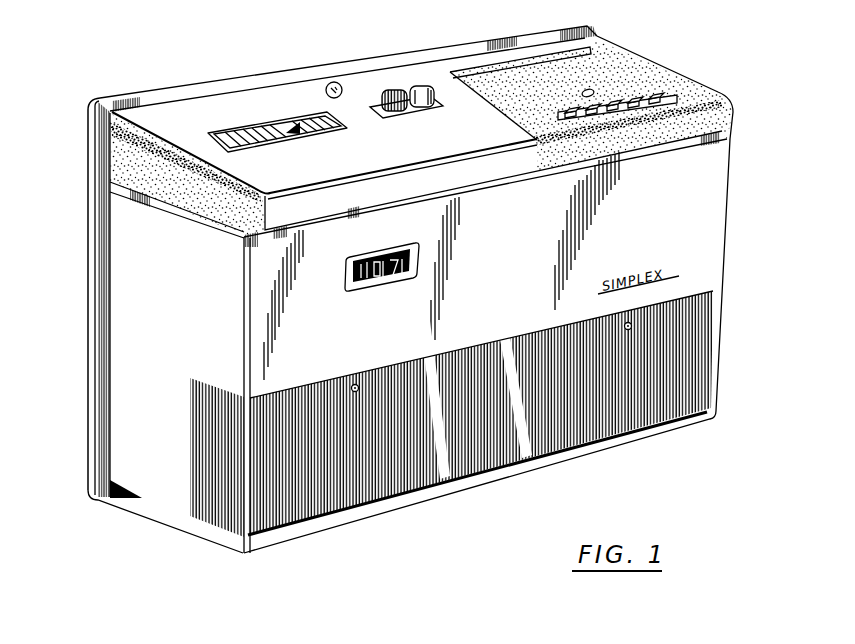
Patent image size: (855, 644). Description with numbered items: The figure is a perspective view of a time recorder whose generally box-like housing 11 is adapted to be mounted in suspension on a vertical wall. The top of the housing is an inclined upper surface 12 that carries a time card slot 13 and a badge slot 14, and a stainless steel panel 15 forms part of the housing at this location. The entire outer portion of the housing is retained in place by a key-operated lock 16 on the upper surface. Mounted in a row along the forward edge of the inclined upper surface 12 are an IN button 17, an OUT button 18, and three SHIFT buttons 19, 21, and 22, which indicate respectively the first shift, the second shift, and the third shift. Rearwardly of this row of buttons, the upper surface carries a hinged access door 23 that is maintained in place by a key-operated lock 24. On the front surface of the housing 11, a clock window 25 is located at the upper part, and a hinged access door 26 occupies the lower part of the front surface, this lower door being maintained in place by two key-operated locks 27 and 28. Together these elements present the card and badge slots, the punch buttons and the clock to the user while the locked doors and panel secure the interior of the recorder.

The housing 11 is at (113, 300).
The inclined upper surface 12 is at (190, 112).
The time card slot 13 is at (286, 132).
The badge slot 14 is at (390, 90).
The stainless steel panel 15 is at (227, 107).
The key-operated lock 16 is at (337, 82).
The IN button 17 is at (573, 110).
The OUT button 18 is at (598, 106).
The SHIFT button 19 is at (617, 100).
The SHIFT button 21 is at (637, 98).
The SHIFT button 22 is at (657, 97).
The hinged access door 23 is at (553, 68).
The key-operated lock 24 is at (590, 90).
The clock window 25 is at (384, 278).
The hinged access door 26 is at (700, 370).
The key-operated lock 27 is at (358, 382).
The key-operated lock 28 is at (627, 323).